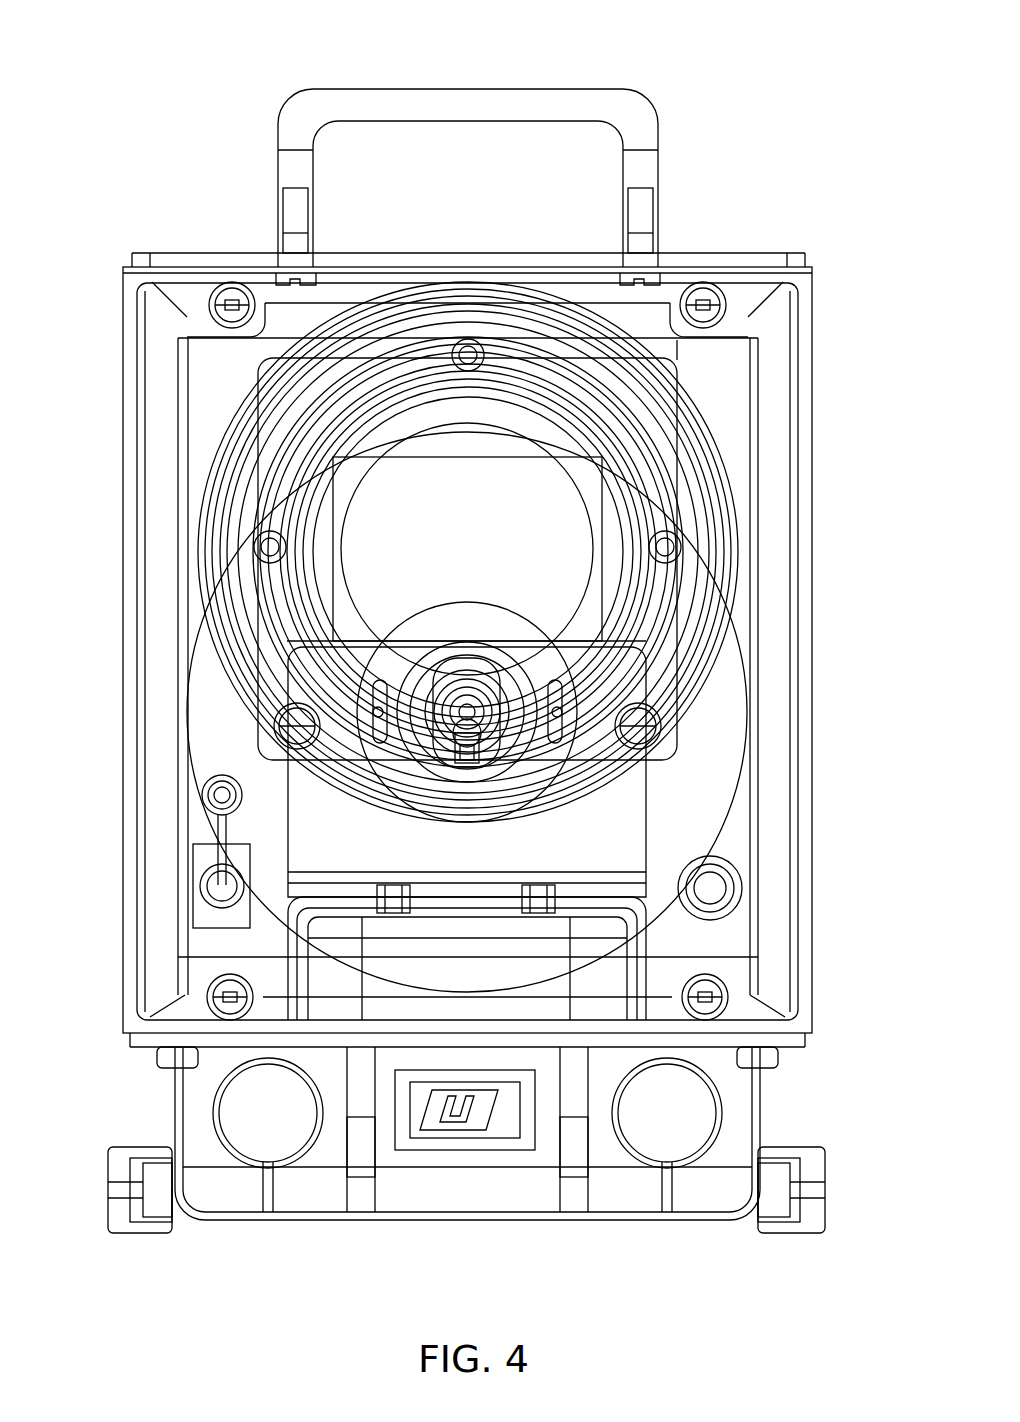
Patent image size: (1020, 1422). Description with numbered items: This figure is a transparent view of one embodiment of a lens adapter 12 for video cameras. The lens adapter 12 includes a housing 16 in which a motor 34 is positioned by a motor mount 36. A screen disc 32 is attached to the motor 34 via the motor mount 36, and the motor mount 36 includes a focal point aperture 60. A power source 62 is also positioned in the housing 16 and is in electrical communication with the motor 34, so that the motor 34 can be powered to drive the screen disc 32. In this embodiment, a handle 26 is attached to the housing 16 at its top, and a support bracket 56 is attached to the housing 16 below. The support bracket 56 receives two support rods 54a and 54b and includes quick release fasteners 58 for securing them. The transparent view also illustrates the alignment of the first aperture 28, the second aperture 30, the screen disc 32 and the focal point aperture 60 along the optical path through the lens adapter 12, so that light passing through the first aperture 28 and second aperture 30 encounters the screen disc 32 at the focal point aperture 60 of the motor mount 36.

The lens adapter 12 is at (124, 90).
The housing 16 is at (748, 262).
The handle 26 is at (508, 100).
The first aperture 28 is at (600, 468).
The second aperture 30 is at (620, 512).
The screen disc 32 is at (745, 635).
The motor 34 is at (690, 738).
The motor mount 36 is at (690, 348).
The focal point aperture 60 is at (330, 520).
The power source 62 is at (180, 940).
The support bracket 56 is at (732, 1098).
The quick release fasteners 58 is at (120, 1172).
The support rod 54a is at (283, 1133).
The support rod 54b is at (650, 1137).